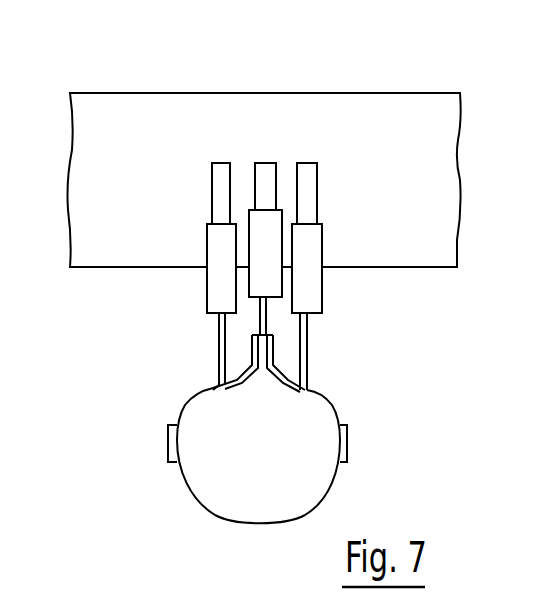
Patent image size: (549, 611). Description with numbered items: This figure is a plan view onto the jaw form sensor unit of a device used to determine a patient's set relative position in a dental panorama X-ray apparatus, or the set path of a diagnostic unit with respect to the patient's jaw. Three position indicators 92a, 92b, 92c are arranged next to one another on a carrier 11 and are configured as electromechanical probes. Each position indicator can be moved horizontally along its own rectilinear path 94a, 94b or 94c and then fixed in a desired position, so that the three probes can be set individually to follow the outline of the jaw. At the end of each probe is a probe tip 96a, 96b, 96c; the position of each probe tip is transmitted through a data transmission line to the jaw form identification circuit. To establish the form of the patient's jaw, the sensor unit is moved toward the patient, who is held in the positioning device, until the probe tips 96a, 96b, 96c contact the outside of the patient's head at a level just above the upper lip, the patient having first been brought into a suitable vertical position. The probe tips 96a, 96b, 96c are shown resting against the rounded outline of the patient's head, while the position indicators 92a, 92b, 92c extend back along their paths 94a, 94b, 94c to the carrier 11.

The panel 11 is at (397, 115).
The position indicator 92a is at (207, 249).
The position indicator 92b is at (279, 205).
The position indicator 92c is at (323, 238).
The rectilinear path 94a is at (212, 194).
The rectilinear path 94b is at (265, 182).
The rectilinear path 94c is at (309, 187).
The probe tip 96a is at (213, 316).
The probe tip 96b is at (252, 330).
The probe tip 96c is at (308, 345).